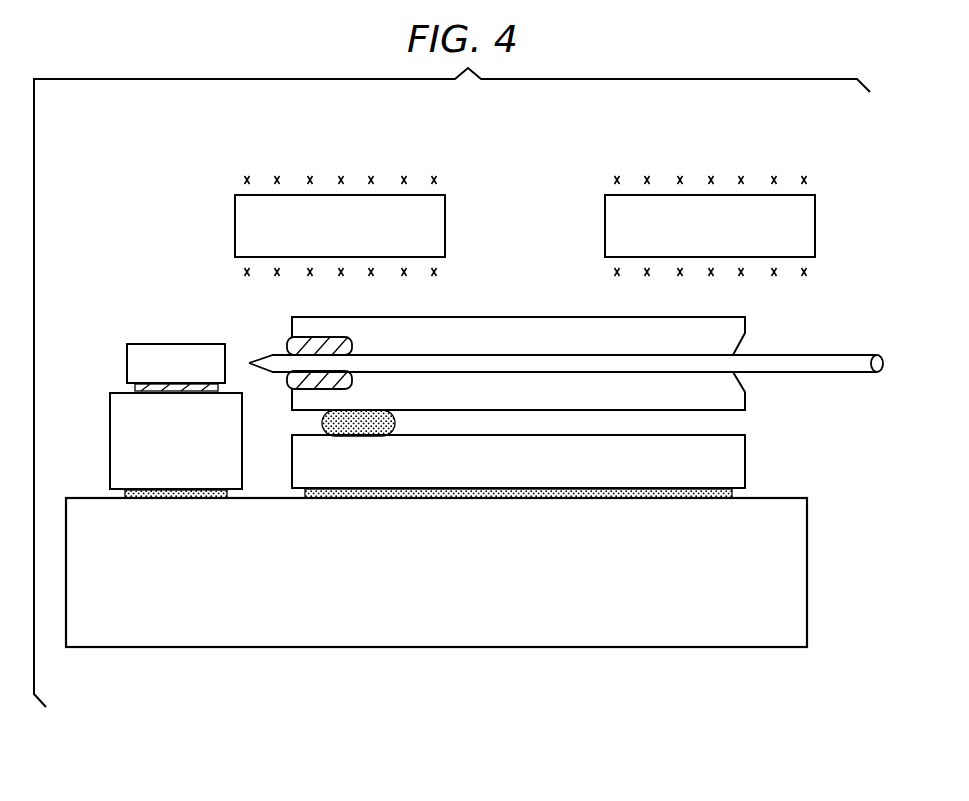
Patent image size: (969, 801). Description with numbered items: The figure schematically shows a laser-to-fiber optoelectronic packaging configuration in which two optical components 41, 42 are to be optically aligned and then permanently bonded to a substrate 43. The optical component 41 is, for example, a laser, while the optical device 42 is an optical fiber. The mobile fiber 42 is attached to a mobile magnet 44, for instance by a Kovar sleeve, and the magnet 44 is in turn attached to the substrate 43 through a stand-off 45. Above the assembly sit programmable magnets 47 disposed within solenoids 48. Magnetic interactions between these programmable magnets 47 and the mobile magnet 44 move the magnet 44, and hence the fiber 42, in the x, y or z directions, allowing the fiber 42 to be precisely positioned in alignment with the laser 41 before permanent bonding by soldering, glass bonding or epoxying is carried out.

The optical component 41 is at (157, 343).
The optical fiber 42 is at (833, 355).
The substrate 43 is at (808, 543).
The mobile magnet 44 is at (745, 393).
The stand-off 45 is at (745, 458).
The programmable magnets 47 is at (414, 195).
The solenoids 48 is at (248, 170).